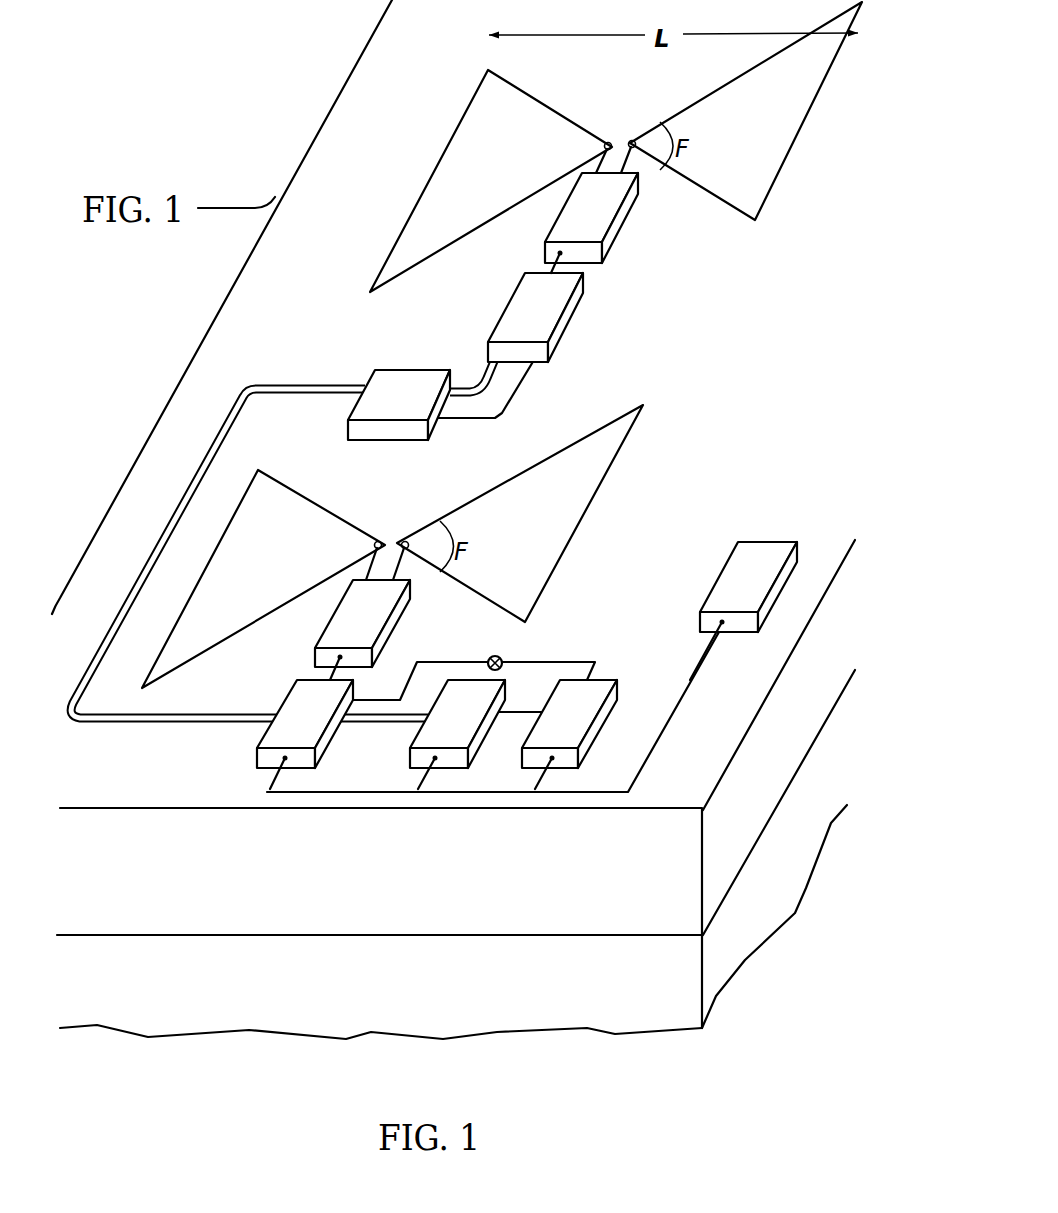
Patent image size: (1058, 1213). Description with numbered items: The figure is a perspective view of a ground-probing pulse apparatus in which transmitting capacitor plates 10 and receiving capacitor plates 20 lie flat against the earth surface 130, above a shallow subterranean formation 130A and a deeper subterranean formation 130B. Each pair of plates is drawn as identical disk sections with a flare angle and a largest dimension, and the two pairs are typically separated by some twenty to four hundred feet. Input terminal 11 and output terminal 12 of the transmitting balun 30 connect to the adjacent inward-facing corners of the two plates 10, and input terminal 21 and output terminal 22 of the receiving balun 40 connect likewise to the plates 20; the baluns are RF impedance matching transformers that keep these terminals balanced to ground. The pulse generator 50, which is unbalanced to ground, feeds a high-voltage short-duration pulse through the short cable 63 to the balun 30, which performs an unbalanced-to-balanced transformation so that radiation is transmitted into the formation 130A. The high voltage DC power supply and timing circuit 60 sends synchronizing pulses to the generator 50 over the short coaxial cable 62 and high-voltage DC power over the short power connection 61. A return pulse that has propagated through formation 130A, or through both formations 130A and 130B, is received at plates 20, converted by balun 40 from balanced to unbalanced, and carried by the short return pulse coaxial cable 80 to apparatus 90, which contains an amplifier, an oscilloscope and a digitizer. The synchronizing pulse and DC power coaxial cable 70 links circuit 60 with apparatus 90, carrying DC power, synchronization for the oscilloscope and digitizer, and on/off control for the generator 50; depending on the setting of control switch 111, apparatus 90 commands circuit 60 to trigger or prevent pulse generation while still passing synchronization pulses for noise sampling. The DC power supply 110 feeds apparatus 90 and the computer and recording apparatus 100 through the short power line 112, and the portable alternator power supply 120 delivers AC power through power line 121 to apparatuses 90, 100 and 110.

The transmitting capacitor plates 10 is at (473, 169).
The input terminal of transmitting balun 11 is at (634, 141).
The output terminal of transmitting balun 12 is at (606, 141).
The receiving capacitor plates 20 is at (247, 576).
The input terminal of receiving balun 21 is at (406, 540).
The output terminal of receiving balun 22 is at (377, 538).
The transmitting balun 30 is at (575, 222).
The receiving balun 40 is at (352, 622).
The pulse generator 50 is at (520, 321).
The high voltage DC power supply and timing circuit 60 is at (387, 407).
The power connection 61 is at (520, 400).
The coaxial cable 62 is at (478, 361).
The cable 63 is at (564, 267).
The synchronizing pulse and DC power coaxial cable 70 is at (262, 379).
The return pulse coaxial cable 80 is at (327, 673).
The amplifier apparatus 90 is at (292, 731).
The computer and recording apparatus 100 is at (431, 731).
The DC power supply 110 is at (544, 731).
The control switch 111 is at (513, 653).
The power line 112 is at (375, 723).
The portable alternator power supply 120 is at (721, 592).
The power line 121 is at (690, 680).
The earth surface 130 is at (708, 336).
The shallow subterranean formation 130A is at (545, 894).
The deeper subterranean formation 130B is at (545, 998).